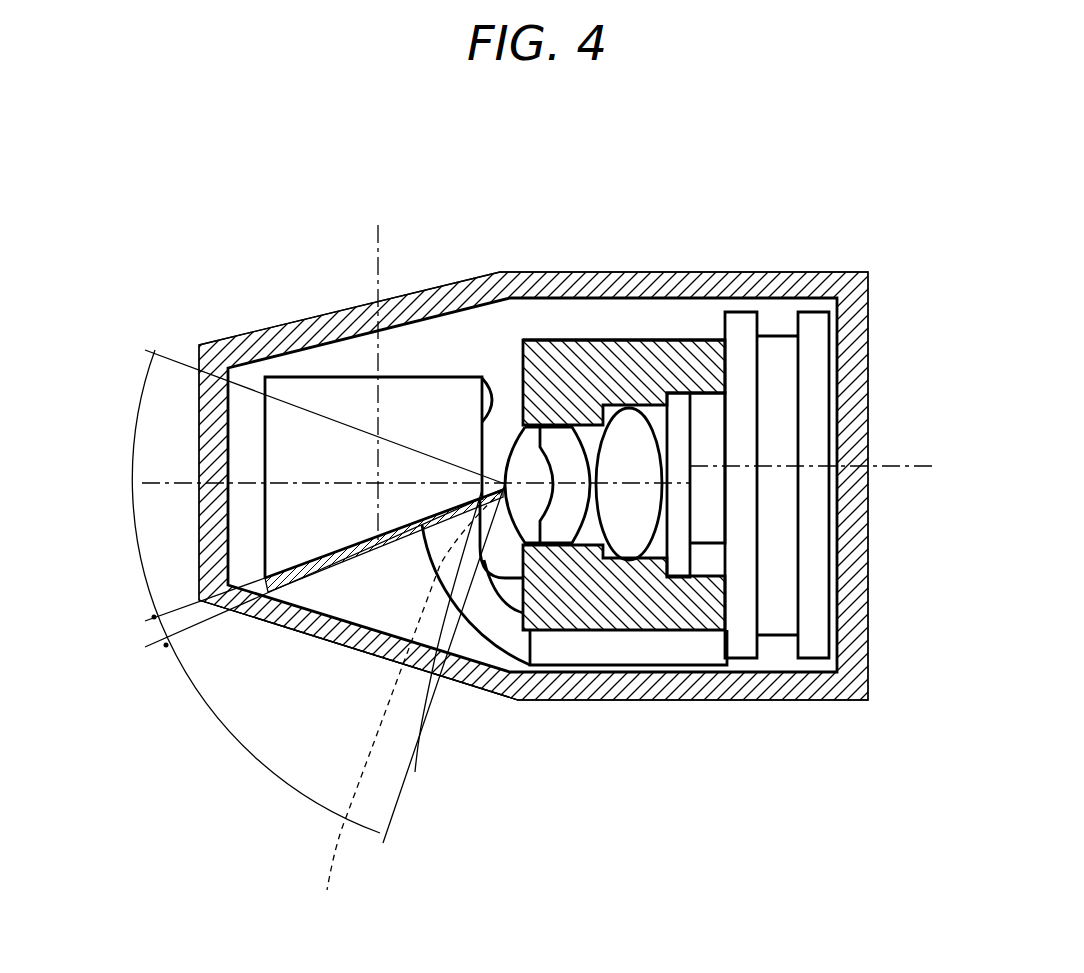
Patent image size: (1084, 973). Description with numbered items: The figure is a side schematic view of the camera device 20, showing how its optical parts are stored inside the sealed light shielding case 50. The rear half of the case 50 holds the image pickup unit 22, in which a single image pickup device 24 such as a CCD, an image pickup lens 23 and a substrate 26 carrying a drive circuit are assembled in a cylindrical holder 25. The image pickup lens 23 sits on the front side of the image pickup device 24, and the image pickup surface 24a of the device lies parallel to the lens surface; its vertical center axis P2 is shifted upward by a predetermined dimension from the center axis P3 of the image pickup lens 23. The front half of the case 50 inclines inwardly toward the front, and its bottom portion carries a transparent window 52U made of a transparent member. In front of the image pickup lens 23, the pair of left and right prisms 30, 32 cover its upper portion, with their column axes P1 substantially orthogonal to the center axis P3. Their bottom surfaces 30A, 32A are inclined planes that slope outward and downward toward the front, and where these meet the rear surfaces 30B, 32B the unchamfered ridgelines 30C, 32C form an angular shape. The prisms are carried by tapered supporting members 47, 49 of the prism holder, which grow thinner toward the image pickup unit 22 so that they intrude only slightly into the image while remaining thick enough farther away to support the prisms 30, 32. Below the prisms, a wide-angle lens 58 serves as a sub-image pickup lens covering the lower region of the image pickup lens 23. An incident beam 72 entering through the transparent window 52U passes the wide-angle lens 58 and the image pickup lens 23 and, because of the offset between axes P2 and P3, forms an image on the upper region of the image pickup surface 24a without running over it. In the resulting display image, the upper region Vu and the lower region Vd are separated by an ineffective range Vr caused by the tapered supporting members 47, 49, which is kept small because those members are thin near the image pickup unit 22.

The camera device 20 is at (541, 192).
The image pickup unit 22 is at (583, 316).
The image pickup lens 23 is at (557, 435).
The image pickup device 24 is at (708, 437).
The image pickup surface 24a is at (686, 432).
The cylindrical holder 25 is at (650, 342).
The substrate 26 is at (728, 323).
The prism 30 is at (358, 416).
The prism 32 is at (317, 385).
The bottom surface 30A is at (354, 592).
The bottom surface 32A is at (293, 567).
The rear surface 30B is at (447, 310).
The rear surface 32B is at (495, 383).
The ridgeline 30C is at (509, 626).
The ridgeline 32C is at (500, 490).
The tapered supporting member 47 is at (384, 610).
The tapered supporting member 49 is at (333, 556).
The light shielding case 50 is at (666, 690).
The transparent window 52U is at (412, 667).
The wide-angle lens 58 is at (457, 588).
The incident beam 72 is at (401, 706).
The column axis P1 is at (378, 225).
The vertical center axis P2 is at (906, 480).
The center axis P3 is at (150, 487).
The upper region Vu is at (131, 450).
The lower region Vd is at (225, 735).
The ineffective range Vr is at (156, 648).